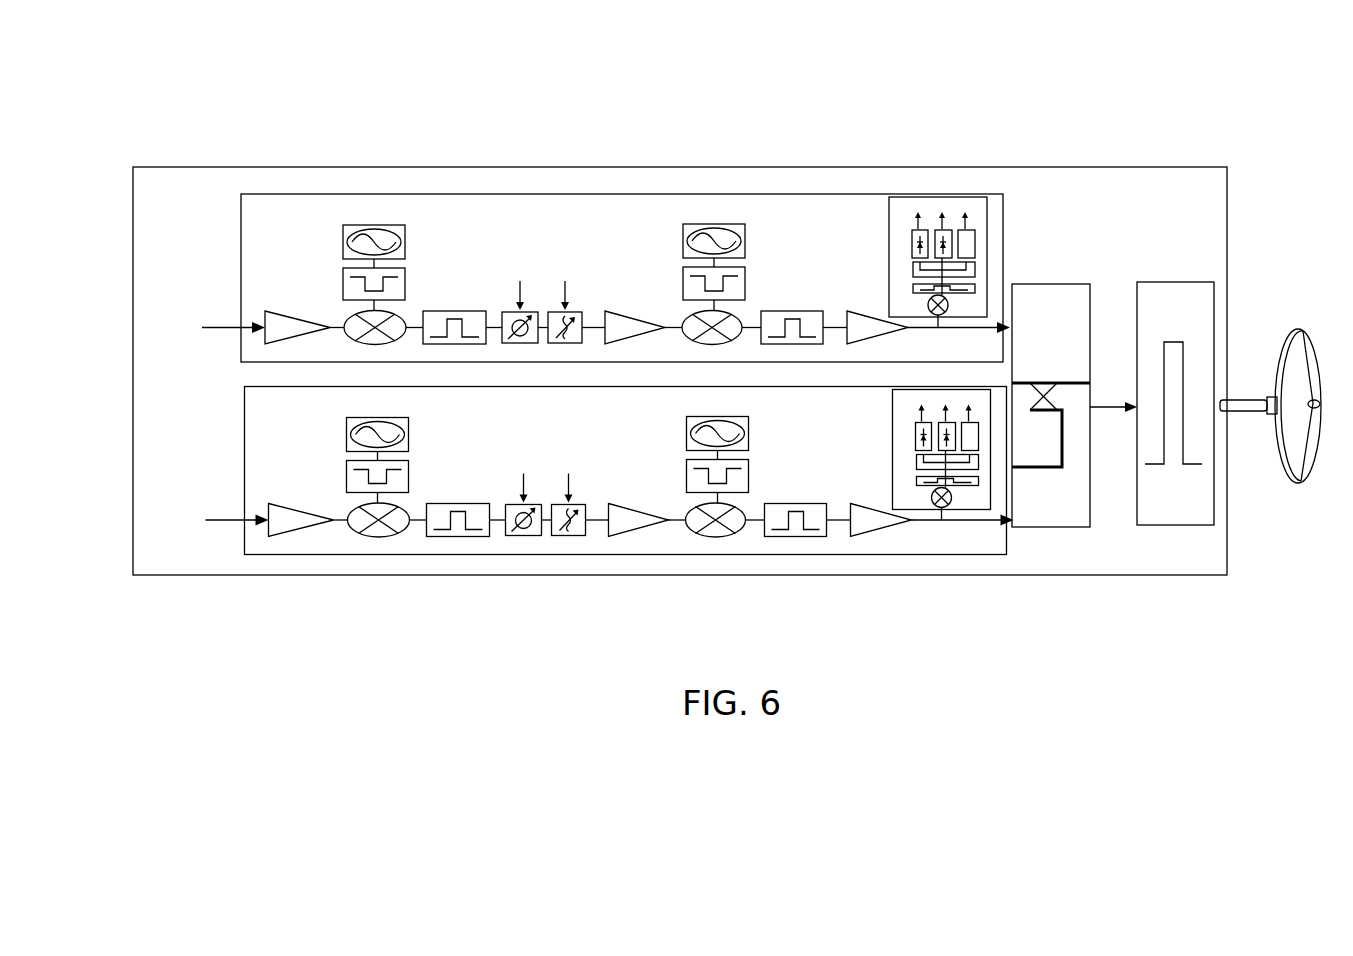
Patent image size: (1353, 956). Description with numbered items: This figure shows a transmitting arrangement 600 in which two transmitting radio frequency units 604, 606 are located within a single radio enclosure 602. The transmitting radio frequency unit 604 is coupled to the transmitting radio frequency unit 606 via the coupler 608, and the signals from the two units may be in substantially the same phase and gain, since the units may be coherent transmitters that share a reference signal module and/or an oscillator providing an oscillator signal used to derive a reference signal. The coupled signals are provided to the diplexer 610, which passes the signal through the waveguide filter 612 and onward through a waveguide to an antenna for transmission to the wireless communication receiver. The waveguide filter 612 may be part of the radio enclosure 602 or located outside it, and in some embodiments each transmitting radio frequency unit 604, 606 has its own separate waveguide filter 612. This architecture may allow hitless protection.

The transmitter system 600 is at (164, 101).
The radio enclosure 602 is at (428, 167).
The transmitting radio frequency unit 604 is at (657, 194).
The transmitting radio frequency unit 606 is at (650, 555).
The coupler 608 is at (1058, 287).
The diplexer 610 is at (1172, 288).
The waveguide filter 612 is at (1308, 326).